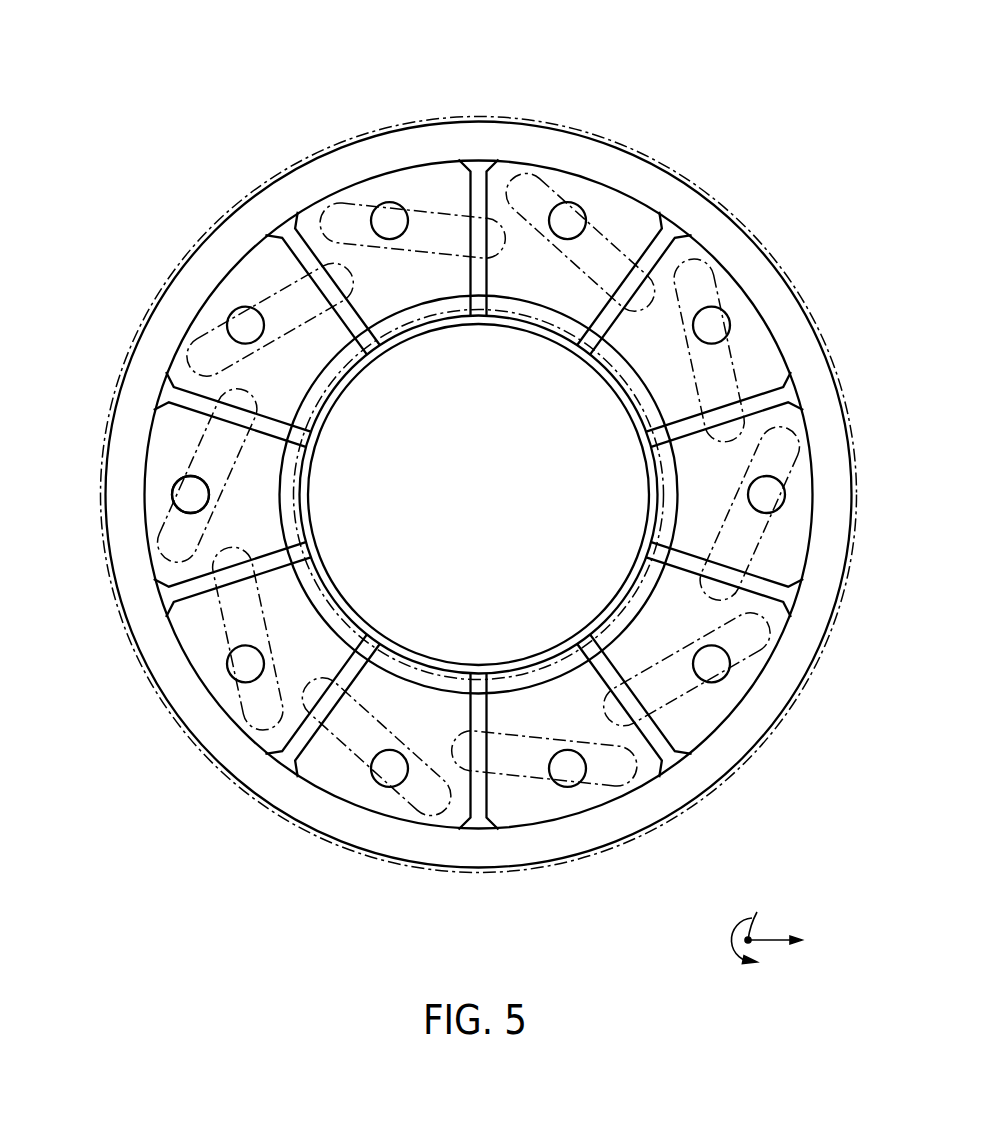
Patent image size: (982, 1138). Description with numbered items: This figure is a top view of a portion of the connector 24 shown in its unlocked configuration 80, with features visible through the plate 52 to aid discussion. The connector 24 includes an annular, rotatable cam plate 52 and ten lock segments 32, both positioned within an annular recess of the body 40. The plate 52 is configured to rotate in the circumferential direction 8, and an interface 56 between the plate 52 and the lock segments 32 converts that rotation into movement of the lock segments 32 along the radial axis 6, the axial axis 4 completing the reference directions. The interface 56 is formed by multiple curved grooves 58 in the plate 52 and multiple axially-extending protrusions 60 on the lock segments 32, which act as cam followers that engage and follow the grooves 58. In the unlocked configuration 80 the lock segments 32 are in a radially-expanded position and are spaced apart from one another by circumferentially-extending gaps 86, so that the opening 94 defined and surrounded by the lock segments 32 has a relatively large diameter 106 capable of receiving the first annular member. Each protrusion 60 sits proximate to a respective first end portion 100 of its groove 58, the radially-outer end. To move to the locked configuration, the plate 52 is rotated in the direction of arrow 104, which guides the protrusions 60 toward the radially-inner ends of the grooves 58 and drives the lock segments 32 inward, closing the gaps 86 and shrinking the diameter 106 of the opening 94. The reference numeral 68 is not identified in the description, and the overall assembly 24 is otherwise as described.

The axial axis 4 is at (754, 913).
The radial axis 6 is at (770, 940).
The circumferential direction 8 is at (733, 935).
The connector 24 is at (768, 115).
The lock segments 32 is at (272, 458).
The body 40 is at (823, 578).
The plate 52 is at (153, 302).
The interface 56 is at (220, 497).
The grooves 58 is at (178, 474).
The protrusions 60 is at (190, 496).
The rotor assembly 68 is at (103, 690).
The unlocked configuration 80 is at (745, 165).
The gap 86 is at (278, 426).
The opening 94 is at (587, 540).
The first end portion 100 is at (168, 572).
The arrow 104 is at (405, 70).
The diameter 106 is at (423, 346).